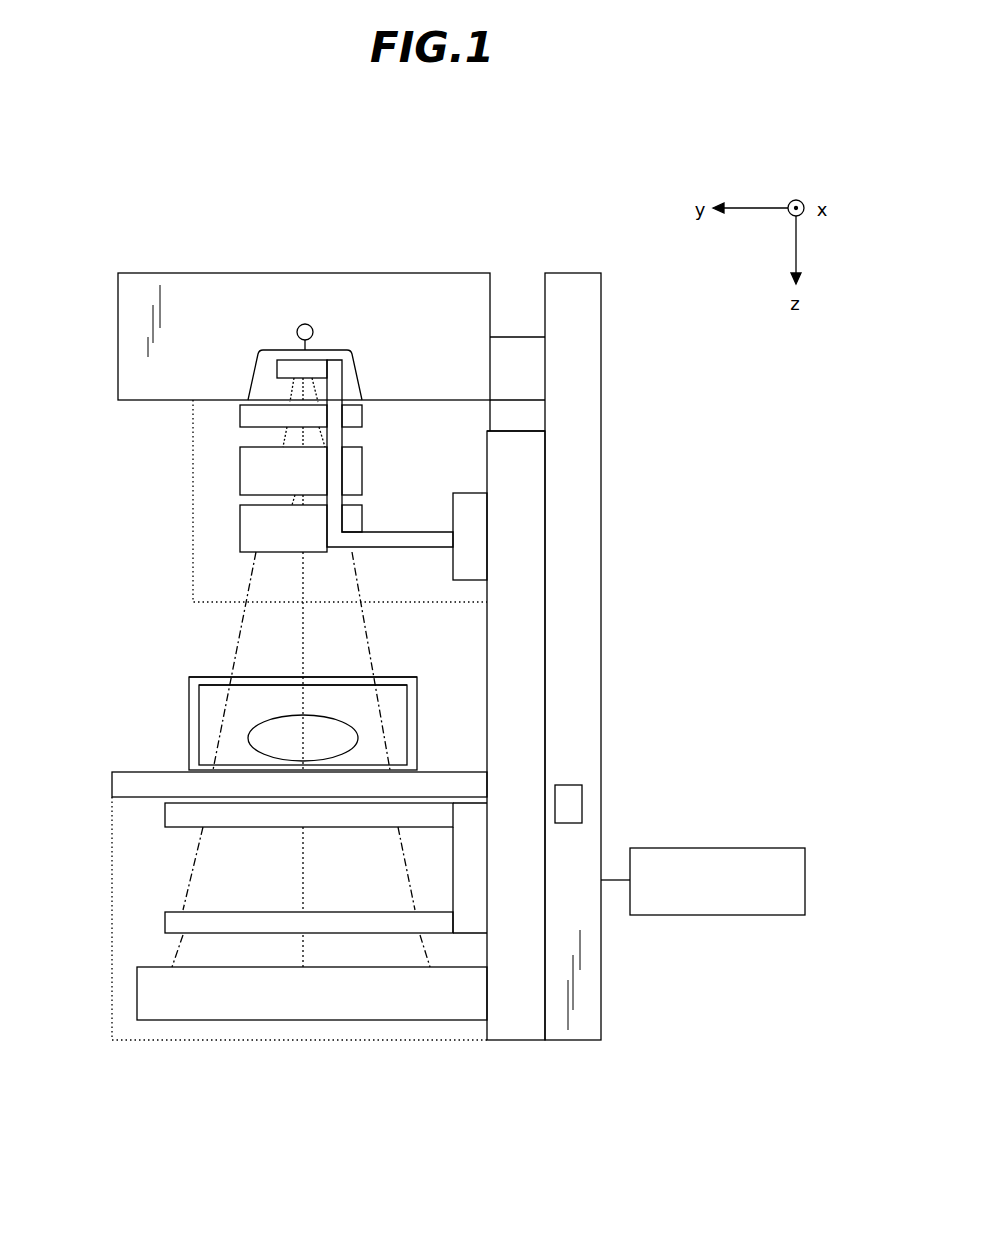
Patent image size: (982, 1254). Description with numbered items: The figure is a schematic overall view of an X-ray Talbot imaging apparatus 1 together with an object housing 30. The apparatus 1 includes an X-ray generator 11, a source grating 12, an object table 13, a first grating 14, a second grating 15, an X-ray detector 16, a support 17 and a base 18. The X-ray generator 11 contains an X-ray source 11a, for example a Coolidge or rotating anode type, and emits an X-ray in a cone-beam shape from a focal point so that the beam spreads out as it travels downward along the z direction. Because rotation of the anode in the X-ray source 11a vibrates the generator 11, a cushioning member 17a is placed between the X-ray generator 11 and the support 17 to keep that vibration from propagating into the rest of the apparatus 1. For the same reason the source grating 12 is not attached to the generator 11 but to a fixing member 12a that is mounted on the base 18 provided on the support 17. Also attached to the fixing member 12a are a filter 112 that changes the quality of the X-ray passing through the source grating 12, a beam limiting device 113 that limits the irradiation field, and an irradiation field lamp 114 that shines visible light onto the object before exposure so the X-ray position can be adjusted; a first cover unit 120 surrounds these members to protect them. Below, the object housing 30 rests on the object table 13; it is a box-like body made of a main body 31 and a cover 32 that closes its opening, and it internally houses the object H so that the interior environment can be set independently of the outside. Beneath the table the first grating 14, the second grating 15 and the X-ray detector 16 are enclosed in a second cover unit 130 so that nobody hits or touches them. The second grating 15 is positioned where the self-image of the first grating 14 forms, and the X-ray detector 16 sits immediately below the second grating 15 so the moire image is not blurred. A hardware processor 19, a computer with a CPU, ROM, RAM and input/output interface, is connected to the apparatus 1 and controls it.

The X-ray Talbot imaging apparatus 1 is at (509, 193).
The X-ray generator 11 is at (402, 273).
The X-ray source 11a is at (313, 328).
The source grating 12 is at (290, 357).
The fixing member 12a is at (405, 548).
The object table 13 is at (430, 770).
The first grating 14 is at (338, 825).
The second grating 15 is at (200, 912).
The X-ray detector 16 is at (158, 967).
The support 17 is at (596, 347).
The cushioning member 17a is at (503, 335).
The base 18 is at (543, 478).
The hardware processor 19 is at (765, 848).
The object housing 30 is at (185, 750).
The main body 31 is at (412, 703).
The cover 32 is at (212, 683).
The object H is at (248, 737).
The filter 112 is at (240, 415).
The beam limiting device 113 is at (240, 465).
The irradiation field lamp 114 is at (240, 528).
The first cover unit 120 is at (193, 585).
The second cover unit 130 is at (112, 957).